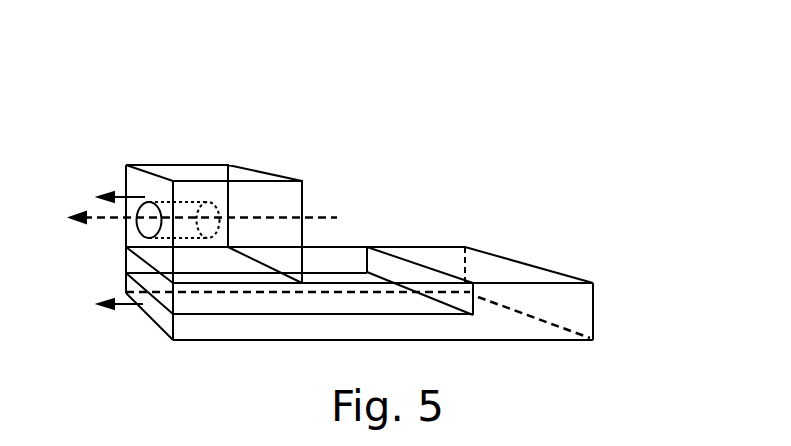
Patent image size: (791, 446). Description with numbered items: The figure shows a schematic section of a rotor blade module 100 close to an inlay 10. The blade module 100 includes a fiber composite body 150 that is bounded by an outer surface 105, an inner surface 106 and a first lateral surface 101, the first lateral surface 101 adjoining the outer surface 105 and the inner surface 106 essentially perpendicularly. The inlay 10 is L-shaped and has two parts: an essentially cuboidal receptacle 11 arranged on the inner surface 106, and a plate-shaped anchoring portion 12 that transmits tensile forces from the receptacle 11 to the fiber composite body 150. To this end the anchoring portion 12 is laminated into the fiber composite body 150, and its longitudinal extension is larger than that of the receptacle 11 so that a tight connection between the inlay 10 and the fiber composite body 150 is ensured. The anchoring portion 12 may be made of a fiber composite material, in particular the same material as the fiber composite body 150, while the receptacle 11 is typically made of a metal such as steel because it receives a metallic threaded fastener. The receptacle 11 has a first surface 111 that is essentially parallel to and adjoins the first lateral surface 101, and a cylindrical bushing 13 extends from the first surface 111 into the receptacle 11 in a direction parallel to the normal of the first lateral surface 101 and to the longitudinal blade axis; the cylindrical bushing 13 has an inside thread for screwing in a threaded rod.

The rotor blade module 100 is at (158, 46).
The inlay 10 is at (303, 195).
The receptacle 11 is at (217, 164).
The cylindrical bushing 13 is at (215, 202).
The first surface 111 is at (152, 188).
The fiber composite body 150 is at (597, 300).
The anchoring portion 12 is at (407, 260).
The inner surface 106 is at (487, 270).
The outer surface 105 is at (518, 330).
The first lateral surface 101 is at (163, 317).